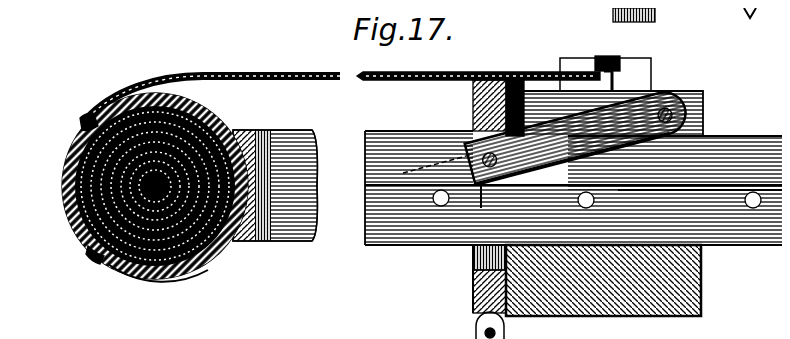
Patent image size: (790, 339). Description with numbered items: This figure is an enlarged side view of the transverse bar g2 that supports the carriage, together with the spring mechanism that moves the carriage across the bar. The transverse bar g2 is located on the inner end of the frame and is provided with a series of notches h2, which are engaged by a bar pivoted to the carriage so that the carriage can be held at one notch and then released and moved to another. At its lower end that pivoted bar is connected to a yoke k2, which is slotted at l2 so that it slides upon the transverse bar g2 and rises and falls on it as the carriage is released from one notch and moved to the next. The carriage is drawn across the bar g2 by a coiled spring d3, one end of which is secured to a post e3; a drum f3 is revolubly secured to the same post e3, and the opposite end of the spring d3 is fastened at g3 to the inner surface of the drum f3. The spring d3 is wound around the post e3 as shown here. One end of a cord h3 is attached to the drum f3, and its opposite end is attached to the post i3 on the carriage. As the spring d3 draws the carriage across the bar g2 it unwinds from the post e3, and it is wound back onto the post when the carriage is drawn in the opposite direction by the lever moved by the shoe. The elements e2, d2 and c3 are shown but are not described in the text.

The cord h3 is at (182, 65).
The coiled spring d3 is at (58, 161).
The coiled tape in spool e2 is at (62, 205).
The spring attachment point g3 is at (84, 244).
The drum f3 is at (110, 263).
The transverse bar g2 is at (378, 172).
The yoke k2 is at (466, 101).
The post i3 is at (608, 54).
The post e3 is at (577, 136).
The notches h2 is at (486, 207).
The bar block d2 is at (675, 163).
The slot l2 is at (466, 250).
The base block c3 is at (603, 280).